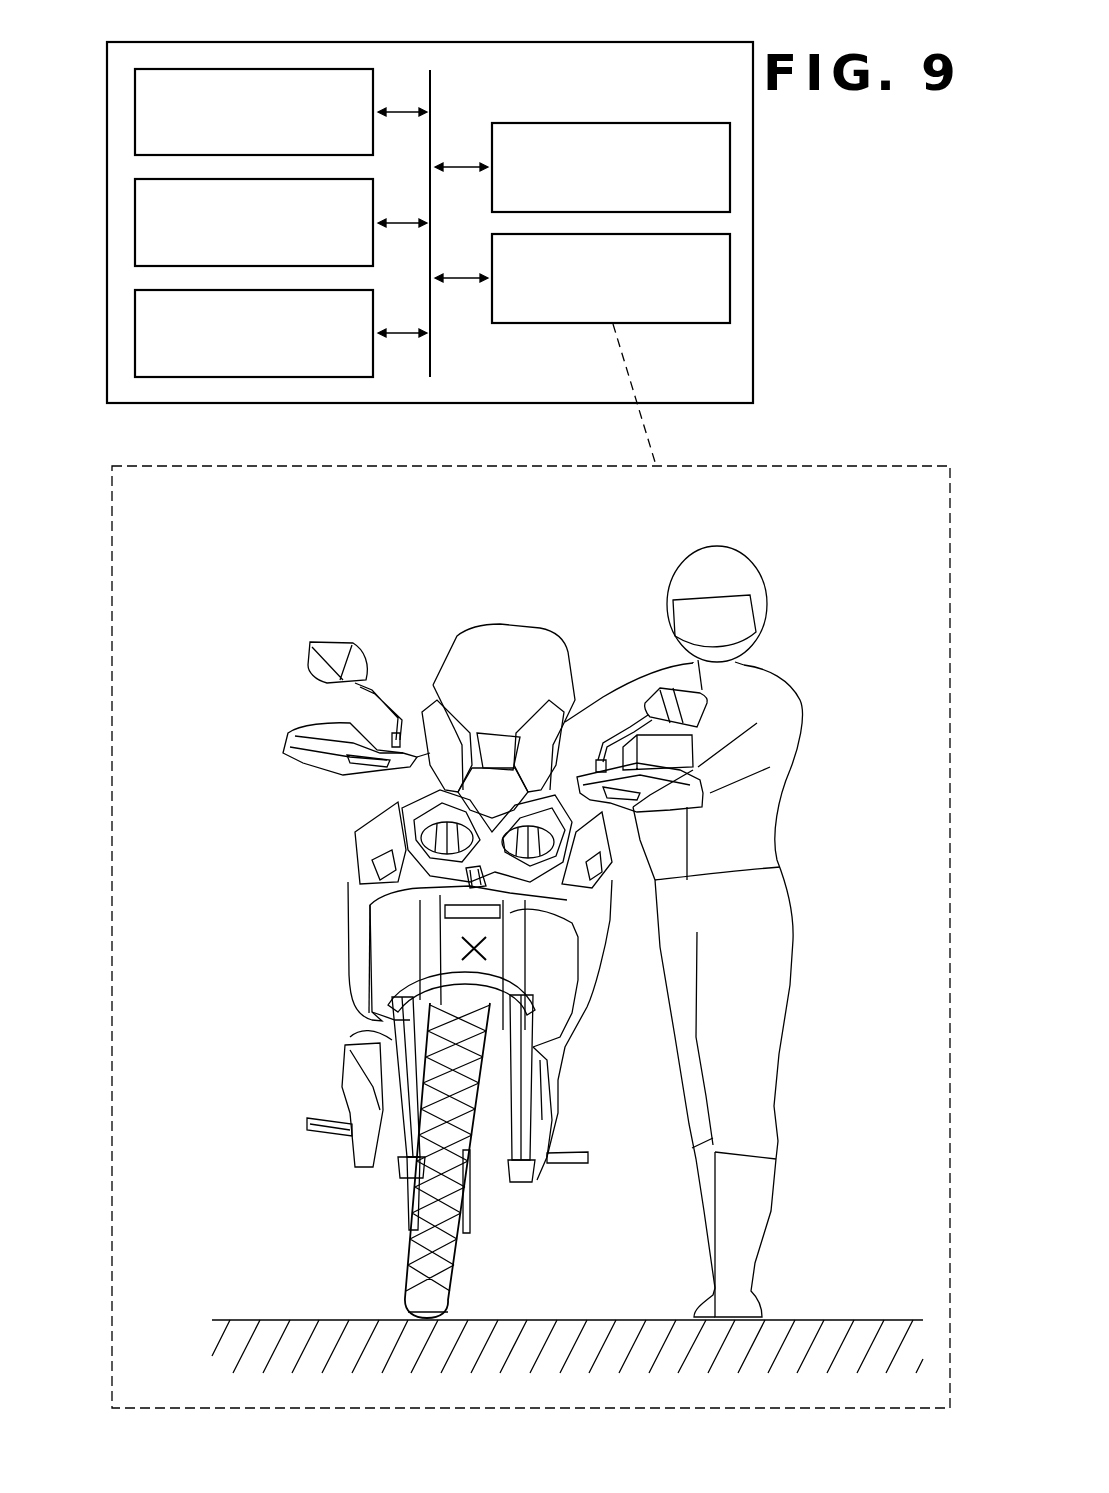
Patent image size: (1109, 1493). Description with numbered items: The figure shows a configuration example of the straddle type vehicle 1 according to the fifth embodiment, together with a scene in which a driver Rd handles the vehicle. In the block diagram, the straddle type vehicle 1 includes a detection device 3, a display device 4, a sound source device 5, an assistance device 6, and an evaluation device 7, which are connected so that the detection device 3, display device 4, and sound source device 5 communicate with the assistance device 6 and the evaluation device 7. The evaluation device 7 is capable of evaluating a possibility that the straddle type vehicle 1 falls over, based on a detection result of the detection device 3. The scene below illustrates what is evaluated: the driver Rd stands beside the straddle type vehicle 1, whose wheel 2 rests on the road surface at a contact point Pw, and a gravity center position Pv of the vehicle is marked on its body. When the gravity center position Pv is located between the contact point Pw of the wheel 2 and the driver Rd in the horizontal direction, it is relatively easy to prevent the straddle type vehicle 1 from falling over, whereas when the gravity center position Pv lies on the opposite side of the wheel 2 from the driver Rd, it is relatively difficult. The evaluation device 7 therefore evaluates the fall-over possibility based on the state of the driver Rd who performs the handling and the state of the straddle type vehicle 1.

The straddle type vehicle 1 is at (107, 64).
The wheel 2 is at (410, 1260).
The detection device 3 is at (135, 112).
The display device 4 is at (135, 222).
The sound source device 5 is at (135, 334).
The assistance device 6 is at (731, 168).
The evaluation device 7 is at (731, 278).
The driver Rd is at (793, 683).
The gravity center position Pv is at (456, 945).
The contact point Pw is at (461, 1310).